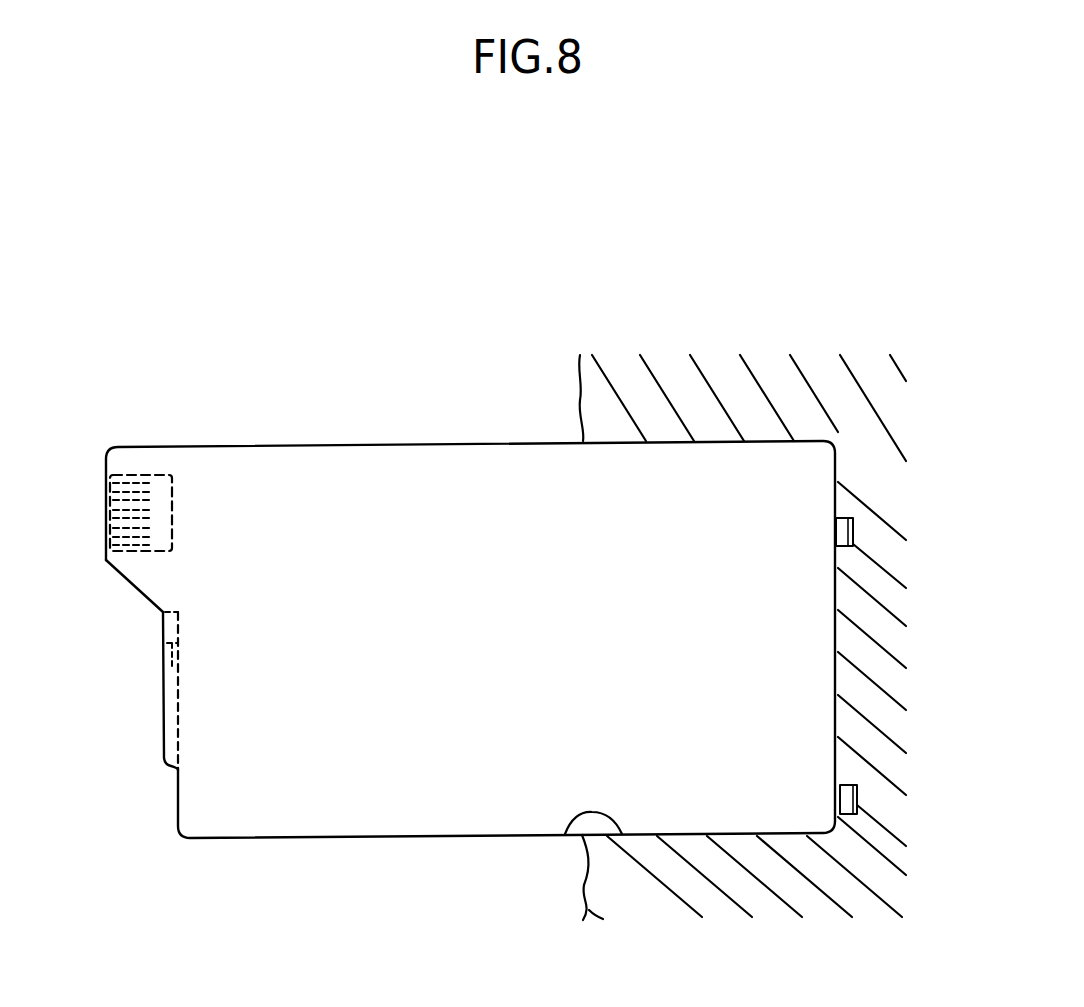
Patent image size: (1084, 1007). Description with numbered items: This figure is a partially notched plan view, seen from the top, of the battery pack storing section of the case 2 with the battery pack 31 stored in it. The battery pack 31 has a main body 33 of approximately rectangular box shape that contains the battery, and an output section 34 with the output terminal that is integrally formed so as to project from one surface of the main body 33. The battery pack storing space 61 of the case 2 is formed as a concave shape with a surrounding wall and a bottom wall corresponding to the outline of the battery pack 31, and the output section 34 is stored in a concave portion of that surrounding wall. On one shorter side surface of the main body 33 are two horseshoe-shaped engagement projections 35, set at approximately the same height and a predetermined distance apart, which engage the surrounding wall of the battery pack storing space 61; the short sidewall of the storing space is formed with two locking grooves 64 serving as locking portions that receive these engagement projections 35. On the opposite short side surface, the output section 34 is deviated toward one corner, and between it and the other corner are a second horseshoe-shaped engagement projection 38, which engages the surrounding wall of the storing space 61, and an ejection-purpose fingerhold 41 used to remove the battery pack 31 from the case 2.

The case 2 is at (660, 902).
The battery pack 31 is at (365, 366).
The main body 33 is at (465, 457).
The output section 34 is at (150, 456).
The engagement projection 35 is at (836, 533).
The engagement projection 38 is at (165, 655).
The ejection-purpose fingerhold 41 is at (168, 728).
The battery pack storing space 61 is at (565, 834).
The locking groove 64 is at (853, 528).